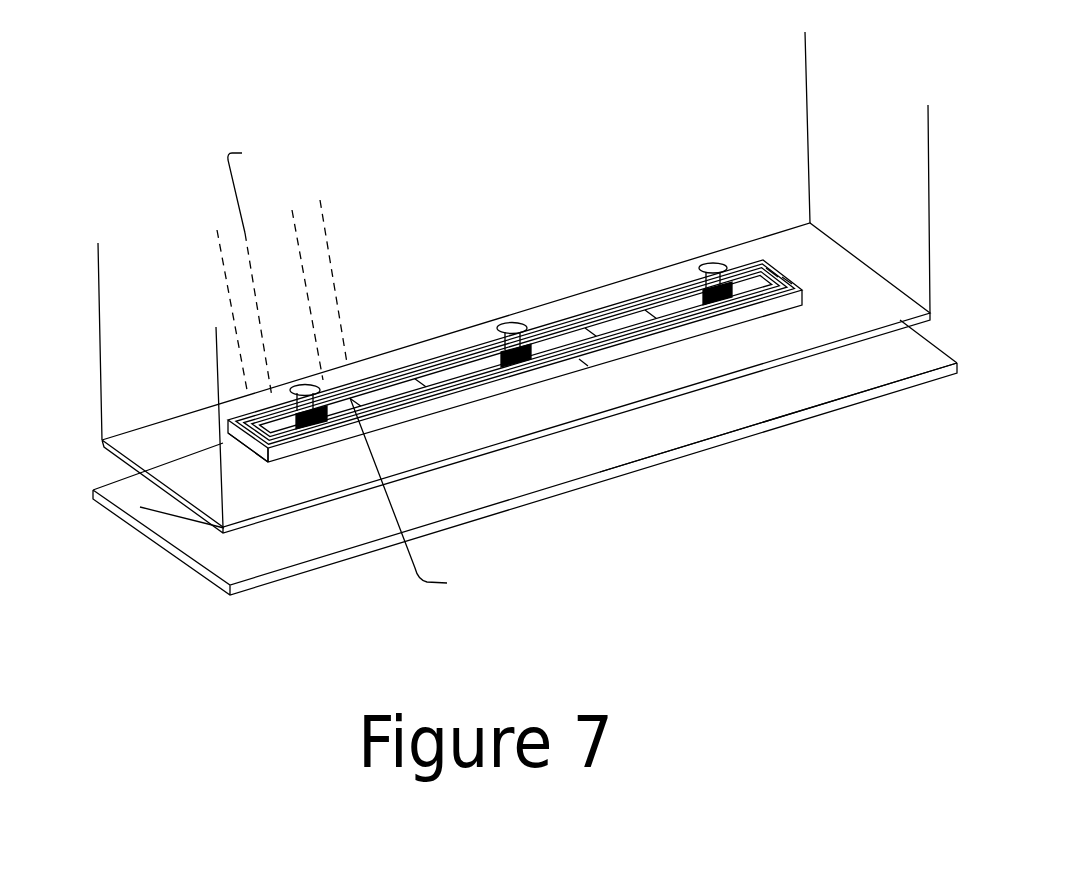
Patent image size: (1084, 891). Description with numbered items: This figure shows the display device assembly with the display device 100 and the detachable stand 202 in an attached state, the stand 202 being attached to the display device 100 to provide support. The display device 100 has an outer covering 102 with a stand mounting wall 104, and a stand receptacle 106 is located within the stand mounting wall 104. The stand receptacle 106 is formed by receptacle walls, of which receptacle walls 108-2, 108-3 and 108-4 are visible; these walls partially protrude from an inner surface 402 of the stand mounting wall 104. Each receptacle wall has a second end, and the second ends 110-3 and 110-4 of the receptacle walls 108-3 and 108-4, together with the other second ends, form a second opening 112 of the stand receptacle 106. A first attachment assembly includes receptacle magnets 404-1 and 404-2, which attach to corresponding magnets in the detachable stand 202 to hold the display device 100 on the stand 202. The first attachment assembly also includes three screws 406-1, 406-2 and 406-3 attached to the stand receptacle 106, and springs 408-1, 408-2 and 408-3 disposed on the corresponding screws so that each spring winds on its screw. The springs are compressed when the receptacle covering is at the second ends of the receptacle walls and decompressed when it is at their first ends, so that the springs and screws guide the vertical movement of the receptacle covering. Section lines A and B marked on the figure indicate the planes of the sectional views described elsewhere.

The display device 100 is at (499, 68).
The outer covering 102 is at (806, 100).
The stand mounting wall 104 is at (190, 465).
The stand receptacle 106 is at (430, 352).
The second opening 112 is at (622, 285).
The detachable stand 202 is at (855, 360).
The inner surface 402 is at (137, 438).
The receptacle magnet 404-1 is at (410, 390).
The receptacle magnet 404-2 is at (647, 317).
The screw 406-1 is at (305, 384).
The screw 406-2 is at (512, 322).
The screw 406-3 is at (713, 263).
The spring 408-1 is at (300, 430).
The spring 408-2 is at (517, 368).
The spring 408-3 is at (730, 302).
The receptacle wall 108-2 is at (583, 362).
The receptacle wall 108-3 is at (772, 273).
The receptacle wall 108-4 is at (247, 438).
The second end 110-3 is at (788, 280).
The second end 110-4 is at (262, 443).